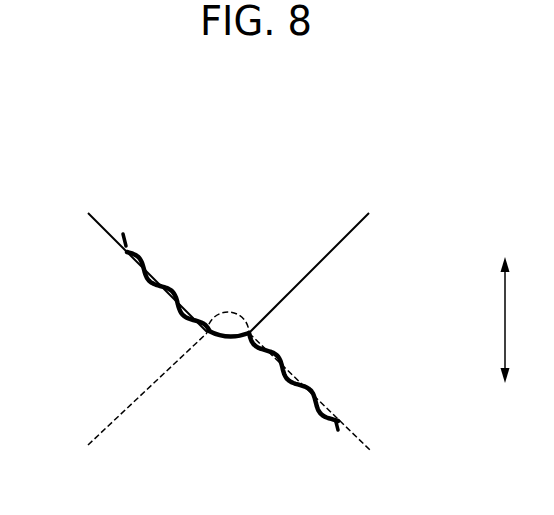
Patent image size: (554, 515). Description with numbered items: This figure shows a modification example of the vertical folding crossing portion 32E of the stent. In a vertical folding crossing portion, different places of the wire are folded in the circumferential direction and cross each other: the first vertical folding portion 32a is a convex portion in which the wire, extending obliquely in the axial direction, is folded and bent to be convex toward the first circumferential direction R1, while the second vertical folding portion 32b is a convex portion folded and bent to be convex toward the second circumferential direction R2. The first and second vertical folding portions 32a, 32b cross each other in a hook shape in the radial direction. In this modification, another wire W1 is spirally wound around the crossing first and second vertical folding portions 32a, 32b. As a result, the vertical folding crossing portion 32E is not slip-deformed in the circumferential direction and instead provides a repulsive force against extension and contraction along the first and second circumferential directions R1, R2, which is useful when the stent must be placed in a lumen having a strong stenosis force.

The vertical folding crossing portion 32E is at (194, 276).
The first vertical folding portion 32a is at (117, 412).
The second vertical folding portion 32b is at (339, 242).
The another wire W1 is at (327, 390).
The first circumferential direction R1 is at (505, 296).
The second circumferential direction R2 is at (505, 396).